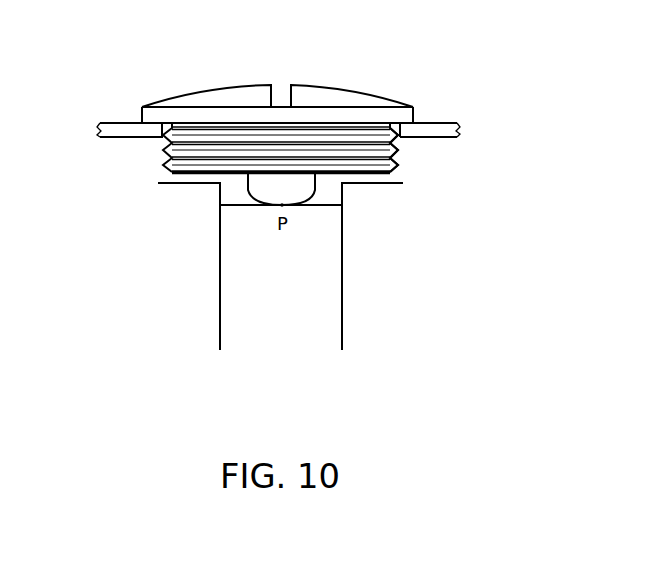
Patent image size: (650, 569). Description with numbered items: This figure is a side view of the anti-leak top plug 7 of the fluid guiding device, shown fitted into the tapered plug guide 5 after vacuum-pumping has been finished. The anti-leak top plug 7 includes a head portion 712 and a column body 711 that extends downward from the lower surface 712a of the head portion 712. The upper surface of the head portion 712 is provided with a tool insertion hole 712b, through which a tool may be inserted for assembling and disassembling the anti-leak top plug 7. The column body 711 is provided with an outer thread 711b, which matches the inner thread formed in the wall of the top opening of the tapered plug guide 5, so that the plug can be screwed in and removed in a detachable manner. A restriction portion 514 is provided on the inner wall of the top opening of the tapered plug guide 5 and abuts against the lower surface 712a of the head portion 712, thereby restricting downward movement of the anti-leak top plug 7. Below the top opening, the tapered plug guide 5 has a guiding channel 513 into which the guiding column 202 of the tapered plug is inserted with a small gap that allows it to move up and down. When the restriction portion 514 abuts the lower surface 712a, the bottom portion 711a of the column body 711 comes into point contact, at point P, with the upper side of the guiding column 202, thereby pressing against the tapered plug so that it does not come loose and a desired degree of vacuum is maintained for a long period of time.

The anti-leak top plug 7 is at (383, 74).
The head portion 712 is at (142, 117).
The lower surface of head portion 712a is at (166, 122).
The tool insertion hole 712b is at (281, 92).
The column body 711 is at (395, 168).
The bottom portion of column body 711a is at (297, 187).
The outer thread 711b is at (400, 143).
The restriction portion 514 is at (431, 128).
The guiding channel 513 is at (227, 193).
The tapered plug guide 5 is at (188, 288).
The guiding column 202 is at (322, 285).